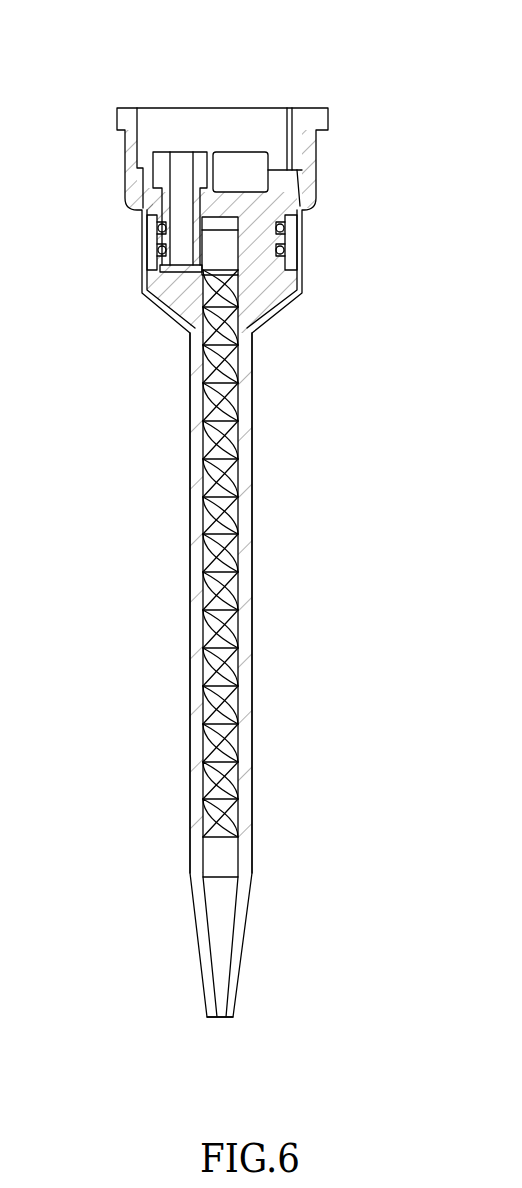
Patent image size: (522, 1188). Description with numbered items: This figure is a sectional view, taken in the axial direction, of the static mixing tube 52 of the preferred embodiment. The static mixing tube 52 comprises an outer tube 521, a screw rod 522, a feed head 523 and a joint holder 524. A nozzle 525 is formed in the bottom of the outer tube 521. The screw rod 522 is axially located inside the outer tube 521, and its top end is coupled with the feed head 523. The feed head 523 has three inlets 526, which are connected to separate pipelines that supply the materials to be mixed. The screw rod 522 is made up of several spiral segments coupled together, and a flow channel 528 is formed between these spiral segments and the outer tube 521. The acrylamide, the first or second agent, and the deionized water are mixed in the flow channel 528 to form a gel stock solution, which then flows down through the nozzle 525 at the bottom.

The static mixing tube 52 is at (340, 96).
The outer tube 521 is at (190, 858).
The screw rod 522 is at (250, 608).
The feed head 523 is at (265, 203).
The joint holder 524 is at (142, 275).
The nozzle 525 is at (218, 1017).
The inlet 526 is at (180, 152).
The flow channel 528 is at (210, 690).